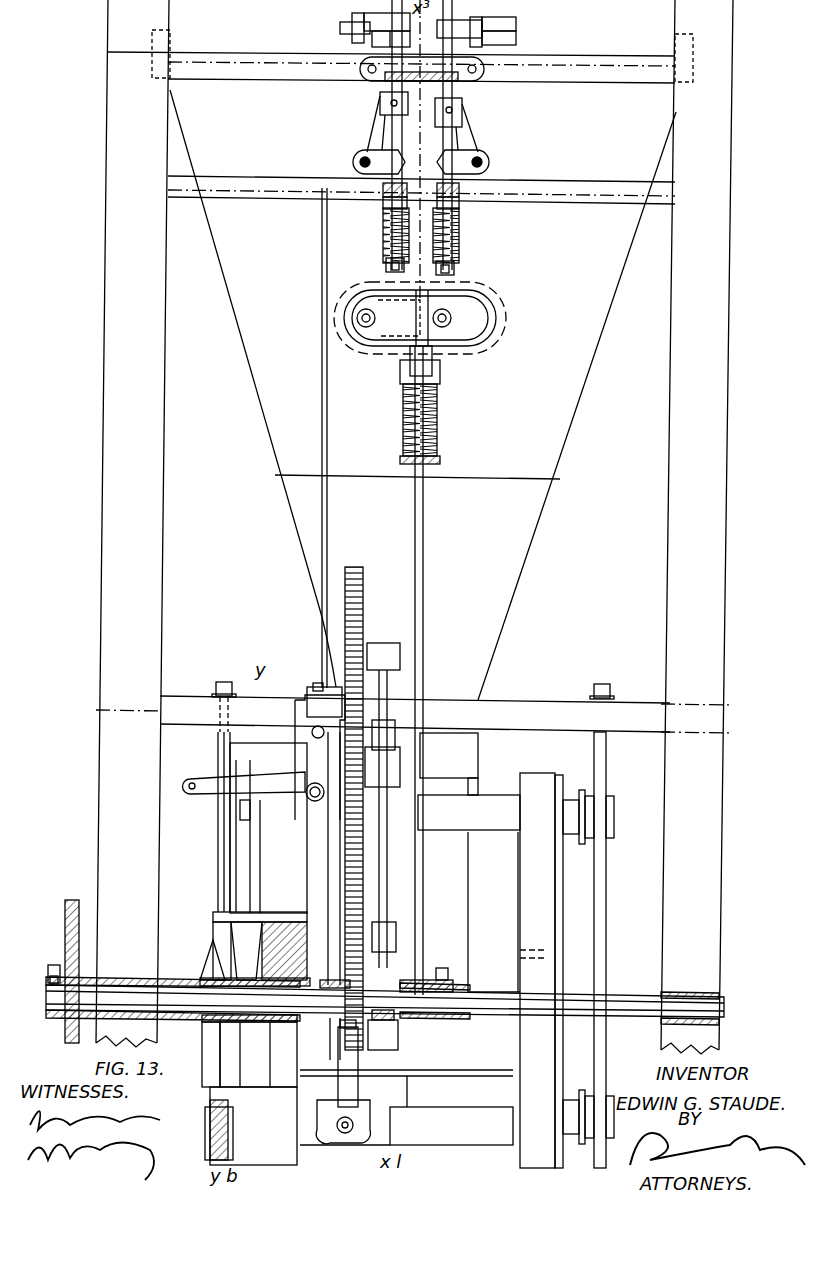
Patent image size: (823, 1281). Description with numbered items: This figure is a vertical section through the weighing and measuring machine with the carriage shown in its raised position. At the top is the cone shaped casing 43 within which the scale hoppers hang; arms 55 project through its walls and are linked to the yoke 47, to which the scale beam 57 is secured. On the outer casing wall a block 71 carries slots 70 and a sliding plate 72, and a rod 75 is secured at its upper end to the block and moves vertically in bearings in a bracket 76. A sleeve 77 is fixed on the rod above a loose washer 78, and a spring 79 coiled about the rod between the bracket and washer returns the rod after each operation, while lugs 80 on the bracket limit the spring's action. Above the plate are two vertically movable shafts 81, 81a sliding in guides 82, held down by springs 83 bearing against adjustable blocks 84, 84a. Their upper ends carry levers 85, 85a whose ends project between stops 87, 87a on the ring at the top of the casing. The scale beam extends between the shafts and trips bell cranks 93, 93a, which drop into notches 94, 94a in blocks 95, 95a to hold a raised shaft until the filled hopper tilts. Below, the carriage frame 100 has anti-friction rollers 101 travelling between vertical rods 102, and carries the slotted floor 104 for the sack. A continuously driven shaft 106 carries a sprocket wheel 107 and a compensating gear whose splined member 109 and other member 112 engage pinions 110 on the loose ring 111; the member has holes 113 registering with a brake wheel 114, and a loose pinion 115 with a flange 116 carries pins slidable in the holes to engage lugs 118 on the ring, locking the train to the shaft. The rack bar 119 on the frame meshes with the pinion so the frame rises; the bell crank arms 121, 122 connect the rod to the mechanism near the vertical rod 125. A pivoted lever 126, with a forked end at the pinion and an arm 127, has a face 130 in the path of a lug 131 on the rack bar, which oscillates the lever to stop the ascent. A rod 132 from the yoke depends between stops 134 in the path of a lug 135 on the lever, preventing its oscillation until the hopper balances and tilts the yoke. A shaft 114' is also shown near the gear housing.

The cone shaped casing 43 is at (568, 420).
The yoke 47 is at (588, 195).
The arms 55 is at (200, 236).
The scale beam 57 is at (416, 200).
The slots 70 is at (496, 302).
The block 71 is at (497, 330).
The plate 72 is at (372, 345).
The rod 75 is at (425, 580).
The bracket 76 is at (442, 460).
The sleeve 77 is at (436, 350).
The washer 78 is at (402, 380).
The spring 79 is at (440, 424).
The lugs 80 is at (436, 372).
The vertically movable shaft 81 is at (460, 138).
The vertically movable shaft 81a is at (383, 132).
The guides 82 is at (484, 69).
The springs 83 is at (460, 240).
The block 84 is at (456, 268).
The block 84a is at (386, 264).
The lever 85 is at (516, 42).
The lever 85a is at (352, 20).
The stops 87 is at (500, 23).
The stops 87a is at (372, 38).
The bell crank 93 is at (490, 158).
The bell crank 93a is at (358, 154).
The notch 94 is at (466, 112).
The notch 94a is at (376, 106).
The block 95 is at (462, 104).
The block 95a is at (380, 98).
The frame 100 is at (524, 884).
The anti-friction rollers 101 is at (218, 812).
The rods 102 is at (222, 850).
The slotted floor 104 is at (466, 1072).
The shaft 106 is at (610, 996).
The sprocket wheel 107 is at (66, 930).
The gear member 109 is at (206, 960).
The pinions 110 is at (214, 928).
The ring 111 is at (214, 912).
The gear member 112 is at (268, 920).
The holes 113 is at (215, 975).
The brake wheel 114 is at (251, 1093).
The shaft 114' is at (228, 836).
The pinion 115 is at (330, 1020).
The flange 116 is at (328, 920).
The lugs 118 is at (240, 1030).
The rack bar 119 is at (356, 570).
The arm 121 is at (398, 950).
The arm 122 is at (400, 1040).
The vertical rod 125 is at (390, 870).
The pivoted lever 126 is at (310, 836).
The arm 127 is at (282, 796).
The face 130 is at (306, 770).
The lug 131 is at (396, 762).
The rod 132 is at (322, 538).
The stops 134 is at (316, 687).
The lug 135 is at (308, 720).